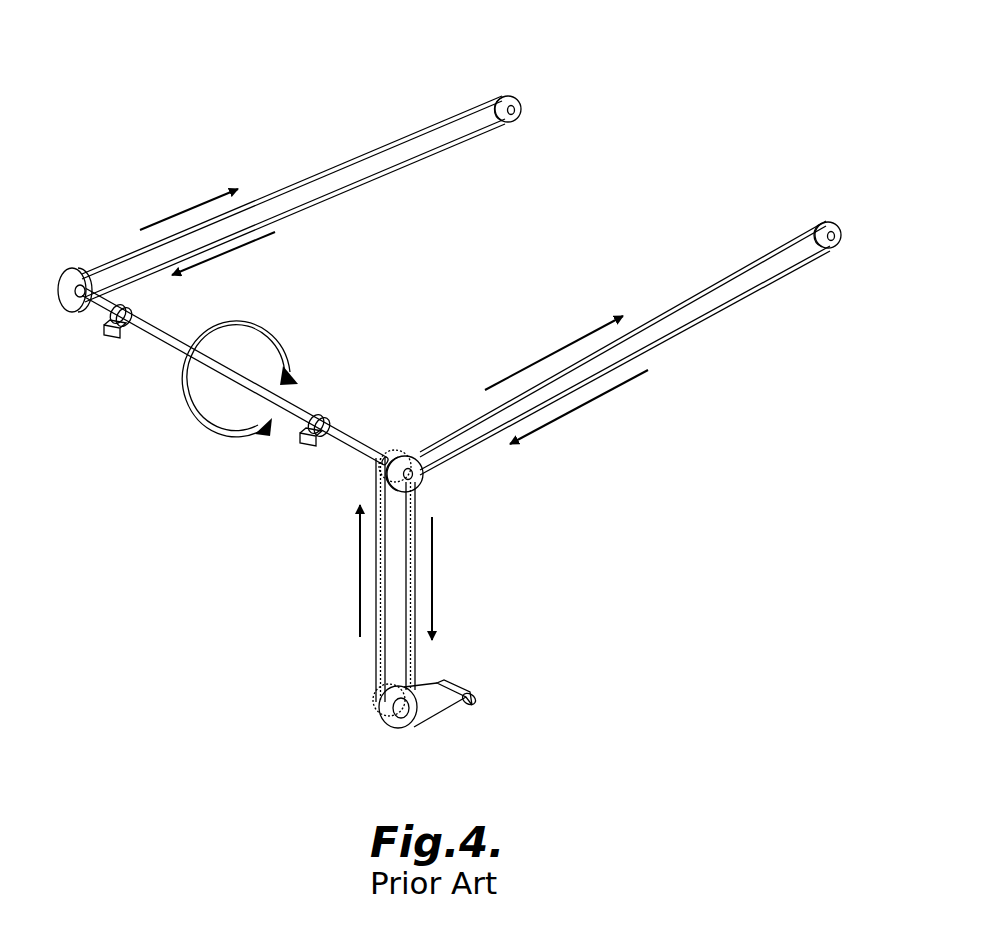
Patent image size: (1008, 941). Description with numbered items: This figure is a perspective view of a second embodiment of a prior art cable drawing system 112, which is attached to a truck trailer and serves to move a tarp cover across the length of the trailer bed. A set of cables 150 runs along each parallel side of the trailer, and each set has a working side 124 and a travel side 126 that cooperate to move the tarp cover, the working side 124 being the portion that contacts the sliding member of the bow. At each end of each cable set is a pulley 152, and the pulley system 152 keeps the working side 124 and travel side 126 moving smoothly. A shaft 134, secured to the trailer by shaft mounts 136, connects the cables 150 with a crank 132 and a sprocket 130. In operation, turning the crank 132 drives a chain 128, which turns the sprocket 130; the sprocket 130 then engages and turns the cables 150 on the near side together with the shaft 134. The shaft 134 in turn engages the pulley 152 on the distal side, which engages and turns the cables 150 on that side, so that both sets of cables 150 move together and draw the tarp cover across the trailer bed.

The cable drawing system 112 is at (607, 140).
The working side 124 is at (270, 192).
The travel side 126 is at (426, 155).
The chain 128 is at (373, 662).
The sprocket 130 is at (396, 448).
The crank 132 is at (443, 681).
The shaft 134 is at (337, 445).
The shaft mounts 136 is at (322, 415).
The cables 150 is at (456, 263).
The pulley 152 is at (78, 268).